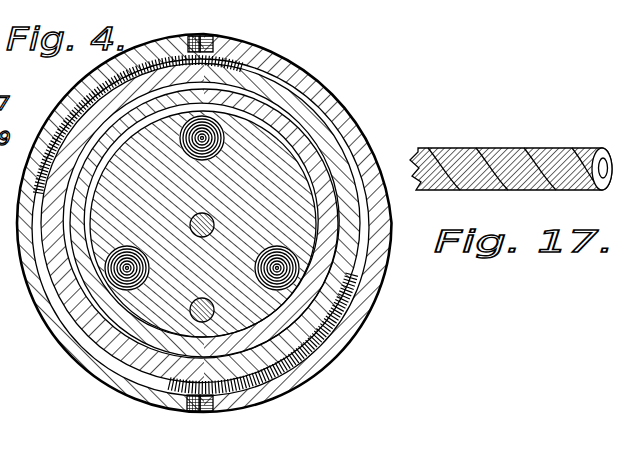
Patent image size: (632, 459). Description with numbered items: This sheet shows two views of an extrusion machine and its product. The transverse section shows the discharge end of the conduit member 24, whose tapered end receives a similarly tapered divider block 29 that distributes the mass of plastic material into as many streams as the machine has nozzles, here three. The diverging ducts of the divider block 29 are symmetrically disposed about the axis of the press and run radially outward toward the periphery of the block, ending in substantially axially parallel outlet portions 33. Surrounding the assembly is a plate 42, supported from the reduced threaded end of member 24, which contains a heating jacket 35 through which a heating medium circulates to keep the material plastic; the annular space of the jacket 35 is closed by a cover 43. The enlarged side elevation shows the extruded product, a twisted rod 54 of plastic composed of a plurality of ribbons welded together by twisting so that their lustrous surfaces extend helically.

In FIG. 4, the member 24 is at (295, 305).
In FIG. 4, the divider block 29 is at (95, 365).
In FIG. 4, the axially parallel portions of the ducts 33 is at (80, 303).
In FIG. 4, the heating jacket 35 is at (345, 148).
In FIG. 4, the plate 42 is at (345, 274).
In FIG. 4, the cover 43 is at (350, 112).
In FIG. 17, the twisted rod 54 is at (546, 152).